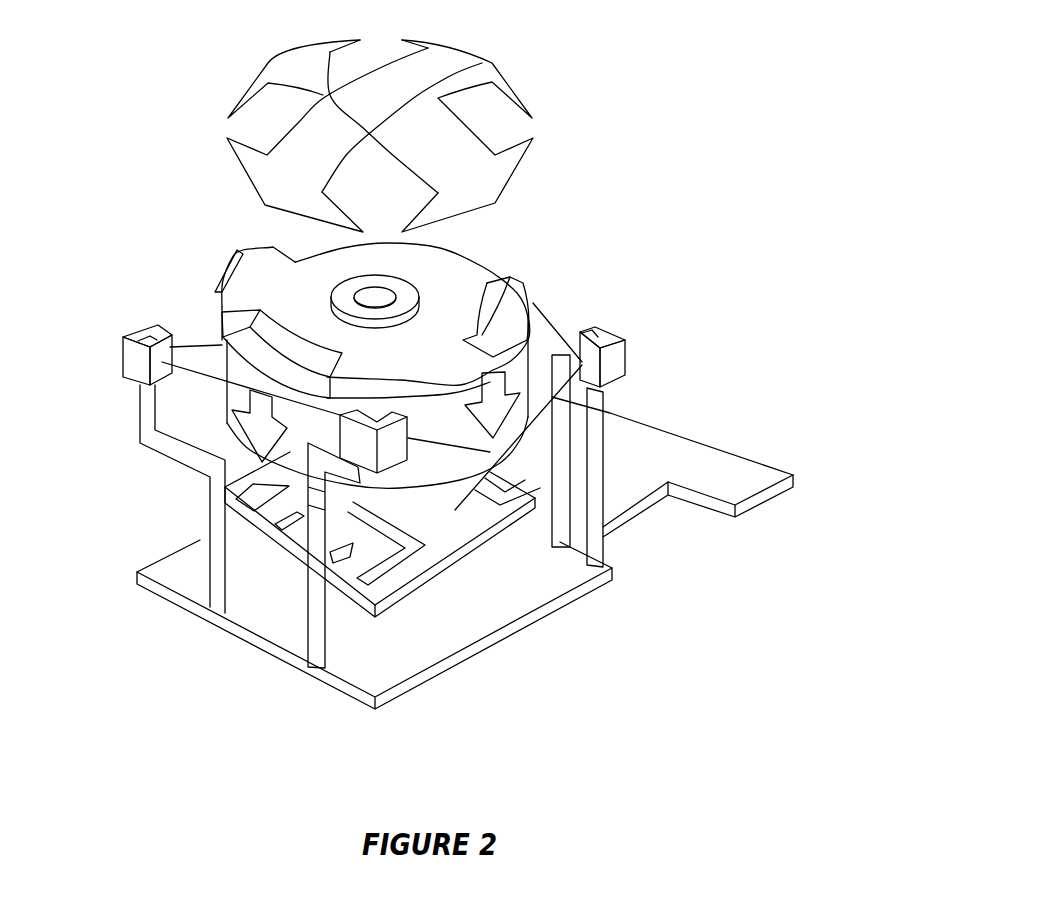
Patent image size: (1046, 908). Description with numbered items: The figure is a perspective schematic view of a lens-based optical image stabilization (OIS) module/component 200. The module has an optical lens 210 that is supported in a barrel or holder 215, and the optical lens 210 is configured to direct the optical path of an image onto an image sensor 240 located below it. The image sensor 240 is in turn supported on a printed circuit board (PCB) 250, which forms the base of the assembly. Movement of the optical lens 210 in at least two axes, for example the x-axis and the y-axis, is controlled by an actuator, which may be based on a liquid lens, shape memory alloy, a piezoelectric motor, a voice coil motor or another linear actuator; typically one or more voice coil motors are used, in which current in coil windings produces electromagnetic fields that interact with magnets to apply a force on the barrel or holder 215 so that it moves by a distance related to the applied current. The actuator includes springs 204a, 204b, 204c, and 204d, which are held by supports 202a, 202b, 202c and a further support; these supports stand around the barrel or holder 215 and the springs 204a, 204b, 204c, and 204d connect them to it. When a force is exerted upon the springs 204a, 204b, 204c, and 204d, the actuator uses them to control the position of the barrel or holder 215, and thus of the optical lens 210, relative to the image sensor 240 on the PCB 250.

The lens-based OIS module/component 200 is at (630, 52).
The optical lens 210 is at (385, 296).
The barrel or holder 215 is at (457, 287).
The support 202a is at (138, 338).
The support 202b is at (373, 470).
The support 202c is at (627, 341).
The spring 204a is at (200, 345).
The spring 204b is at (163, 363).
The spring 204c is at (582, 380).
The spring 204d is at (545, 320).
The image sensor 240 is at (467, 527).
The printed circuit board (PCB) 250 is at (468, 662).